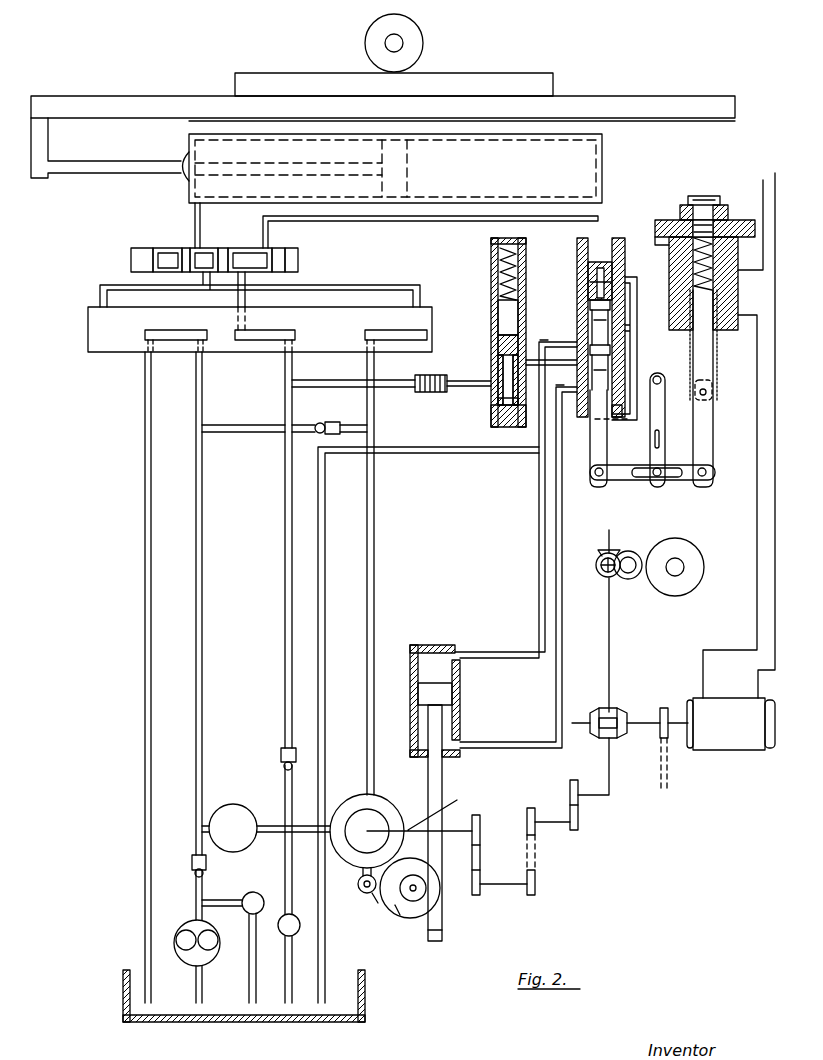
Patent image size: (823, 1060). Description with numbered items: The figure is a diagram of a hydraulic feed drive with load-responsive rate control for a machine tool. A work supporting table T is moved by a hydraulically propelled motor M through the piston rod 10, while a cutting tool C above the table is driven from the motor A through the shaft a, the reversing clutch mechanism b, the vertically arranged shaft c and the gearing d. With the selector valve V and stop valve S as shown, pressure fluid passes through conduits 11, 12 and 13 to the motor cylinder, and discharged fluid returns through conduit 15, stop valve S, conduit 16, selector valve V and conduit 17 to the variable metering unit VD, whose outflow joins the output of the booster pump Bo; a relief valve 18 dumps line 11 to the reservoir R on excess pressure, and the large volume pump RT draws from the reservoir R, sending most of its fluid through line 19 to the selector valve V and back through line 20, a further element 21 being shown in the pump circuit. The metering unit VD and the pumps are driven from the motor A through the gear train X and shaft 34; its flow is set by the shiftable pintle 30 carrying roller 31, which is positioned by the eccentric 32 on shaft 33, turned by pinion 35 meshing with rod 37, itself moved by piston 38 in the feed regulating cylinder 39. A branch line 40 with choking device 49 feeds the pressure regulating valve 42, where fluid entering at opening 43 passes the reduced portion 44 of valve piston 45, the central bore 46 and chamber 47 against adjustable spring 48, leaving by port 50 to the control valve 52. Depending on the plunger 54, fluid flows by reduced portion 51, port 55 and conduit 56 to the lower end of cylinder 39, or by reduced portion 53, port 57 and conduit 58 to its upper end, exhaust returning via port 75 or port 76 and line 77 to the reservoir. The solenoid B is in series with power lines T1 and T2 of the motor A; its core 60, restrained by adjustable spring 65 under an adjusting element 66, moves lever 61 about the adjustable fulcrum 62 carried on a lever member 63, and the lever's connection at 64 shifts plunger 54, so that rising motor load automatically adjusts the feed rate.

The piston rod 10 is at (86, 176).
The conduit 11 is at (292, 700).
The conduit 12 is at (248, 298).
The conduit 13 is at (440, 221).
The conduit 15 is at (193, 223).
The conduit 16 is at (424, 296).
The conduit 17 is at (375, 522).
The high pressure relief valve 18 is at (279, 930).
The line 19 is at (205, 635).
The line 20 is at (143, 516).
The valve 21 is at (258, 896).
The shiftable pintle 30 is at (357, 882).
The roller 31 is at (374, 902).
The cam or eccentric 32 is at (396, 923).
The shaft 33 is at (418, 888).
The shaft 34 is at (424, 806).
The pinion 35 is at (420, 948).
The rod 37 is at (443, 778).
The piston 38 is at (452, 695).
The cylinder 39 is at (455, 716).
The branch line 40 is at (402, 375).
The pressure regulating valve 42 is at (490, 322).
The opening 43 is at (497, 378).
The reduced portion 44 is at (497, 355).
The valve piston 45 is at (505, 318).
The central bore 46 is at (497, 401).
The chamber 47 is at (492, 420).
The adjustable spring 48 is at (490, 281).
The choking device 49 is at (433, 396).
The port 50 is at (532, 355).
The reduced portion 51 is at (600, 378).
The control valve 52 is at (610, 348).
The reduced portion 53 is at (612, 316).
The valve plunger 54 is at (590, 437).
The port 55 is at (570, 385).
The conduit 56 is at (563, 527).
The port 57 is at (574, 344).
The conduit 58 is at (538, 550).
The armature or core 60 is at (716, 360).
The lever 61 is at (636, 480).
The adjustable fulcrum point 62 is at (660, 468).
The lever 63 is at (666, 430).
The connection 64 is at (594, 475).
The adjustable spring 65 is at (672, 265).
The adjusting screw 66 is at (690, 198).
The port 75 is at (631, 330).
The port 76 is at (626, 428).
The line 77 is at (326, 652).
The work supporting table T is at (600, 96).
The power line T1 is at (762, 182).
The power line T2 is at (778, 188).
The cutting tool C is at (423, 46).
The hydraulically propelled motor M is at (393, 168).
The stop valve S is at (128, 258).
The selector valve V is at (86, 330).
The solenoid B is at (740, 305).
The booster pump Bo is at (242, 806).
The variable metering unit VD is at (392, 808).
The gear train X is at (482, 855).
The motor A is at (731, 724).
The shaft a is at (651, 718).
The reversing clutch mechanism b is at (597, 707).
The vertically arranged shaft c is at (612, 645).
The gearing d is at (645, 540).
The reservoir R is at (122, 992).
The large volume pump RT is at (182, 958).